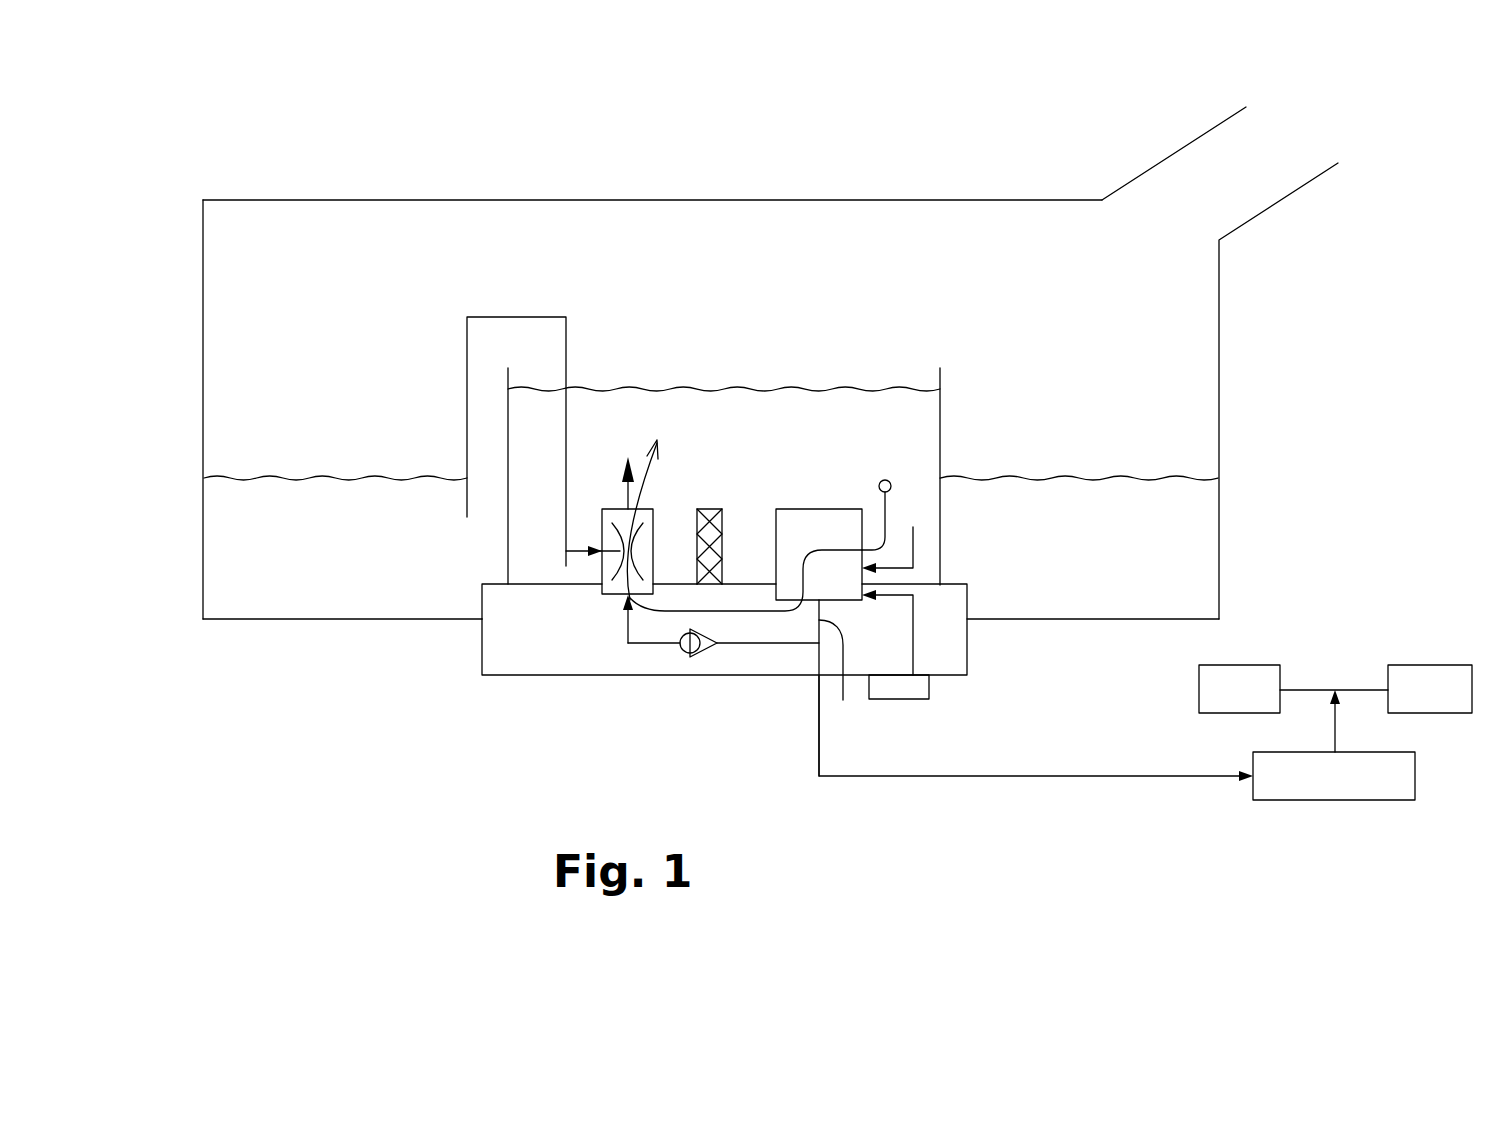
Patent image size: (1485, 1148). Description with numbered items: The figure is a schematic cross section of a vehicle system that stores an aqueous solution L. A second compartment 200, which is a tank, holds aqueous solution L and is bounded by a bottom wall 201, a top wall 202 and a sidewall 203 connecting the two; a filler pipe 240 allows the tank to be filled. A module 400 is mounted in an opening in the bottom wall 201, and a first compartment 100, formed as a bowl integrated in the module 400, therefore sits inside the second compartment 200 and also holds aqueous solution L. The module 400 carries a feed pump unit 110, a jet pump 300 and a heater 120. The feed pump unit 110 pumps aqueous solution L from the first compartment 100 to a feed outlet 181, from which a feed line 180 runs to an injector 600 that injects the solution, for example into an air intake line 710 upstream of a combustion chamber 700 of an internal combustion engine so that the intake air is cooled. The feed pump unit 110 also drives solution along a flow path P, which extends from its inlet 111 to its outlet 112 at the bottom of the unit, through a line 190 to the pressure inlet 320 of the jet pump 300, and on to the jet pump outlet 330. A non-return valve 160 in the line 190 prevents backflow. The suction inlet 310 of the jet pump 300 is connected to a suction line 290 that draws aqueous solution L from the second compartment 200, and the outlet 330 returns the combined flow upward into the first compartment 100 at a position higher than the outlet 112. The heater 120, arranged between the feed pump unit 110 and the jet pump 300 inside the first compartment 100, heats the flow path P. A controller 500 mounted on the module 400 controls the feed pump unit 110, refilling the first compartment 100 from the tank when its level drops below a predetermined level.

The first compartment 100 is at (956, 421).
The feed pump unit 110 is at (801, 509).
The inlet 111 is at (913, 543).
The outlet 112 is at (843, 700).
The heater 120 is at (710, 509).
The non-return valve 160 is at (708, 654).
The feed line 180 is at (843, 777).
The feed outlet 181 is at (816, 677).
The line 190 is at (753, 645).
The second compartment 200 is at (238, 396).
The bottom wall 201 is at (305, 619).
The top wall 202 is at (470, 200).
The sidewall 203 is at (202, 550).
The filler pipe 240 is at (1307, 187).
The suction line 290 is at (510, 317).
The jet pump 300 is at (648, 510).
The suction inlet 310 is at (566, 566).
The pressure inlet 320 is at (627, 630).
The outlet 330 is at (623, 492).
The module 400 is at (447, 669).
The controller 500 is at (930, 688).
The injector 600 is at (1300, 800).
The combustion chamber 700 is at (1257, 665).
The air intake line 710 is at (1443, 665).
The aqueous solution L is at (803, 413).
The flow path P is at (891, 491).